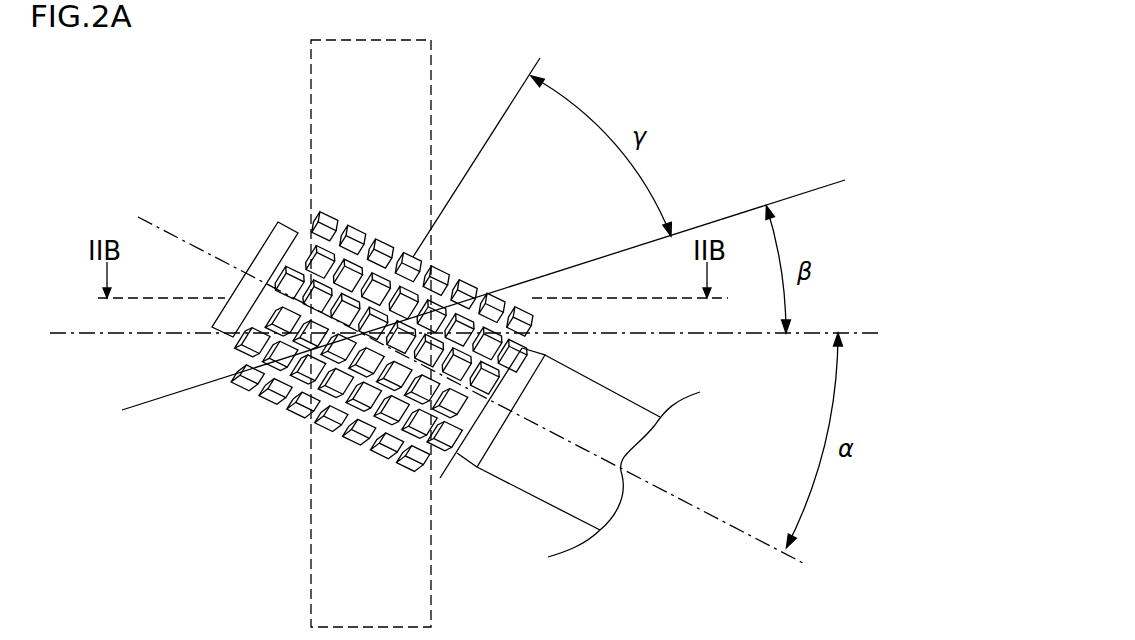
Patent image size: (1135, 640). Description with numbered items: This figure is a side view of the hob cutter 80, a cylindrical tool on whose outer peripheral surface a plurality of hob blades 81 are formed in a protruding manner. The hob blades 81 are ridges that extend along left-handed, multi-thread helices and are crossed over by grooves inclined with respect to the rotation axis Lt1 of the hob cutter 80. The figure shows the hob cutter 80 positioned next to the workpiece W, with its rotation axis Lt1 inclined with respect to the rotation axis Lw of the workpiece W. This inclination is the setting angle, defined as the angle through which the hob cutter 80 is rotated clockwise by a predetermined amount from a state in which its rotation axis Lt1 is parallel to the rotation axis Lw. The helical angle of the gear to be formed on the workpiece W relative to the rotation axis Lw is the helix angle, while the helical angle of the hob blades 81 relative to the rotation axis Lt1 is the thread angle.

The hob cutter 80 is at (249, 165).
The hob blades 81 is at (277, 383).
The workpiece W is at (433, 46).
The rotation axis of the workpiece Lw is at (875, 334).
The rotation axis of the hob cutter Lt1 is at (762, 545).